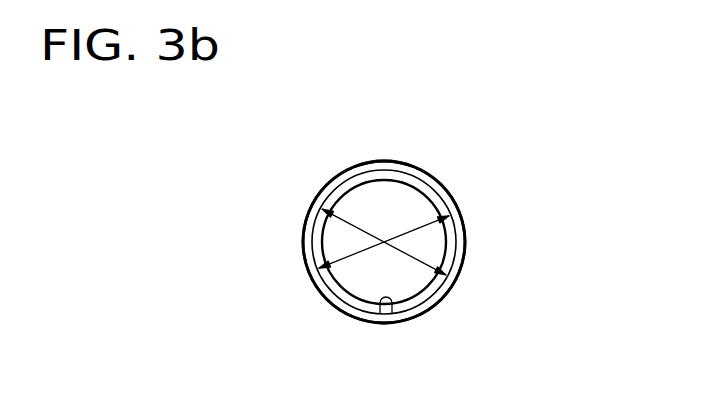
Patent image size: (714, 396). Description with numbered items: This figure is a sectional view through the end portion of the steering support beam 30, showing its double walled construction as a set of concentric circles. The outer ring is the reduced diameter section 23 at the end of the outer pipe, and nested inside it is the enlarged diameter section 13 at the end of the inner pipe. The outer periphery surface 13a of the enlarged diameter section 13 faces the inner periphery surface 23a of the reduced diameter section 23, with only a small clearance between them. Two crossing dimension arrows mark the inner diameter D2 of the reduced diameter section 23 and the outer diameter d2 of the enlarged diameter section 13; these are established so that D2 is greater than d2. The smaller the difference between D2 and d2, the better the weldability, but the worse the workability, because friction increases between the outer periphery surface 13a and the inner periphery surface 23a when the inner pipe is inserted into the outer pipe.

The steering support beam 30 is at (361, 158).
The enlarged diameter section 13 is at (414, 187).
The outer periphery surface 13a is at (456, 224).
The reduced diameter section 23 is at (467, 248).
The inner periphery surface 23a is at (390, 312).
The inner diameter of the reduced diameter section D2 is at (340, 260).
The outer diameter of the enlarged diameter section d2 is at (416, 265).